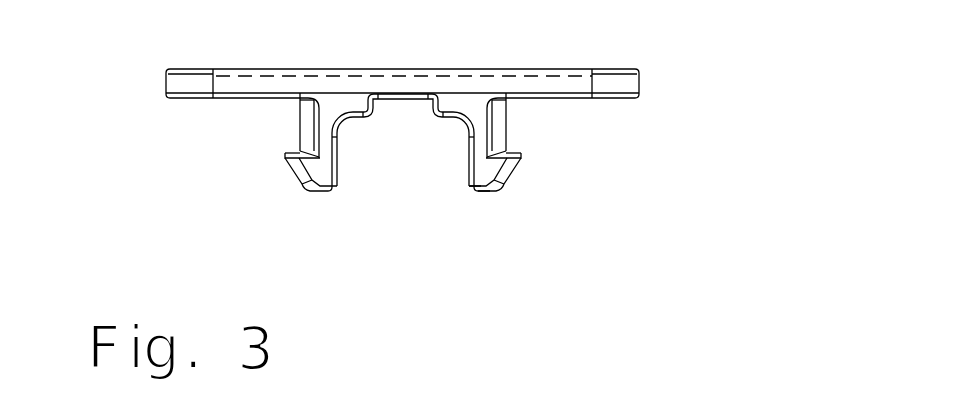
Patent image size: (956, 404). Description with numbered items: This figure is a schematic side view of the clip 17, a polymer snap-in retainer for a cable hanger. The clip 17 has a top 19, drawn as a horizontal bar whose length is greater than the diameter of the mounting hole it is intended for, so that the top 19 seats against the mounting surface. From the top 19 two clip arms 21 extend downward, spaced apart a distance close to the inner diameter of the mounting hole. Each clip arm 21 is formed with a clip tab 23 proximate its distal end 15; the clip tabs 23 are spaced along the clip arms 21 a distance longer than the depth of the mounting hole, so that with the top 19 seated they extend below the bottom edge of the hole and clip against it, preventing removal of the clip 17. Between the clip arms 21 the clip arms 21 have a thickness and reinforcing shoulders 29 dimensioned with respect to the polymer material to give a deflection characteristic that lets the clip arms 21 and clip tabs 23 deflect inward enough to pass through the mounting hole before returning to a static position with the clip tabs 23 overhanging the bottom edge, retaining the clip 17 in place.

The distal end 15 is at (482, 193).
The clip 17 is at (200, 107).
The top 19 is at (573, 69).
The clip arm 21 is at (322, 191).
The clip tab 23 is at (285, 155).
The reinforcing shoulder 29 is at (353, 105).